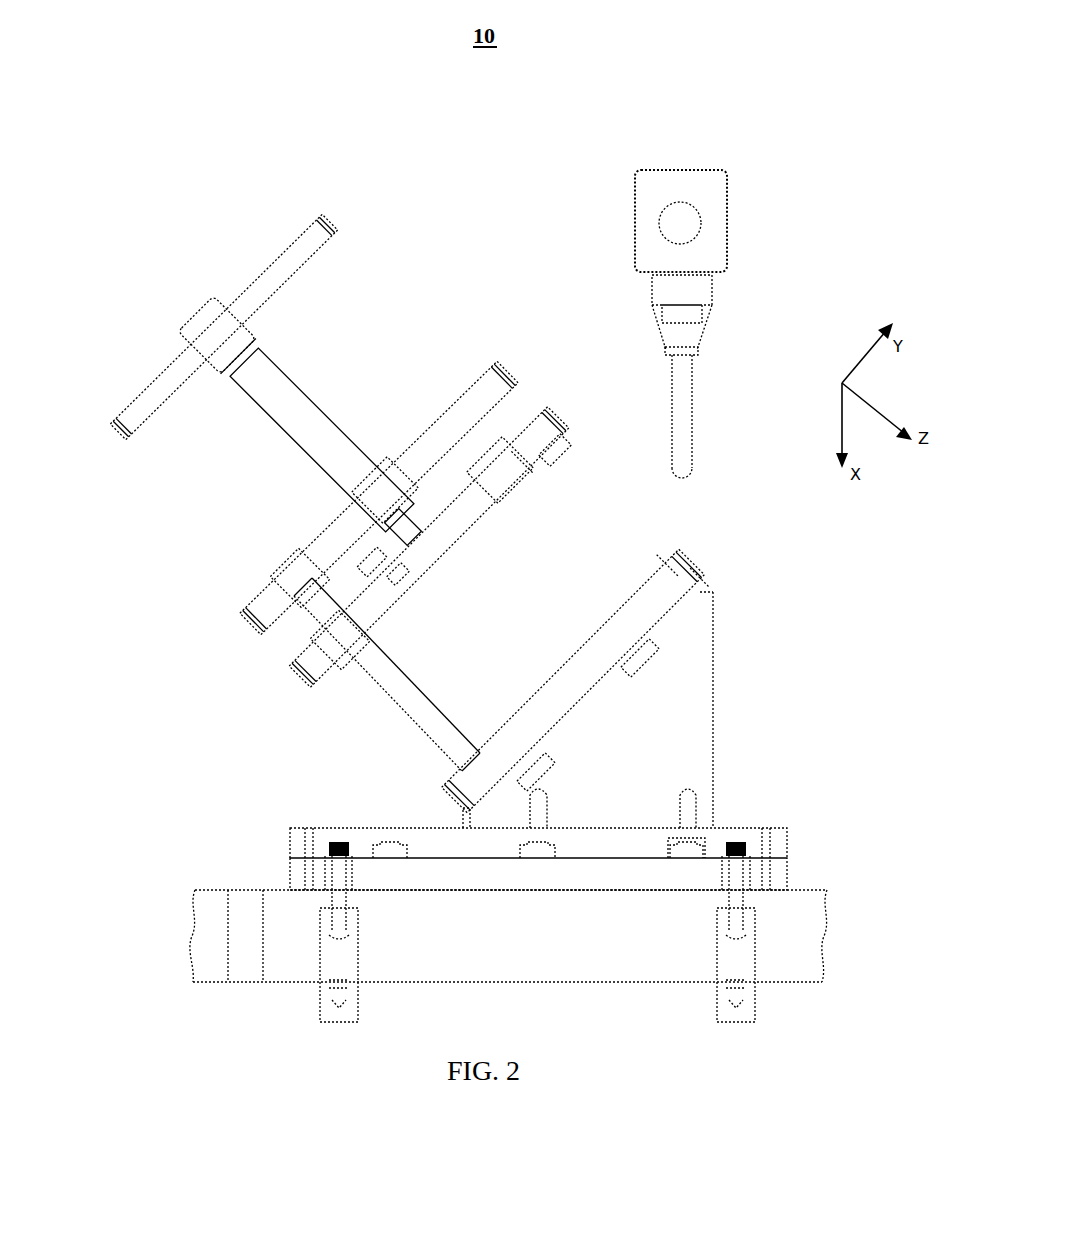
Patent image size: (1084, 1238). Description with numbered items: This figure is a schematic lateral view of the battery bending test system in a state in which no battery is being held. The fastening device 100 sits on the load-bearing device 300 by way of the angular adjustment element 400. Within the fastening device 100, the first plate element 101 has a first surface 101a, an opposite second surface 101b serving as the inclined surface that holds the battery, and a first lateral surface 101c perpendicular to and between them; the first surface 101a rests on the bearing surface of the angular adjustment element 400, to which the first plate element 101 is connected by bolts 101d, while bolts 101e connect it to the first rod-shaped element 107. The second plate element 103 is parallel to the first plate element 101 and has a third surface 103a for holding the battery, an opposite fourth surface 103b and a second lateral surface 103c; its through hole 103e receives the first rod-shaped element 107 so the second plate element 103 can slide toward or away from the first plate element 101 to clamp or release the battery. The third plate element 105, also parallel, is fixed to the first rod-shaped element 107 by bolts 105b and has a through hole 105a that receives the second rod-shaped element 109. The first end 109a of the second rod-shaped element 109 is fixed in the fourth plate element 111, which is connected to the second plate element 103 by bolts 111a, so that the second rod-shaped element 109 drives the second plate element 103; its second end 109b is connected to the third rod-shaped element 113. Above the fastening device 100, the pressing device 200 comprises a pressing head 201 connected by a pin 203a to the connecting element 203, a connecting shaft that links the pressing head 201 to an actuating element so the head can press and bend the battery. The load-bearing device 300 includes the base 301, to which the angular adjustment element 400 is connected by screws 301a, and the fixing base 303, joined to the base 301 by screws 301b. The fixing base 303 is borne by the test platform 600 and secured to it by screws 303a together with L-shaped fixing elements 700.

The fastening device 100 is at (132, 356).
The first plate element 101 is at (552, 710).
The first surface 101a is at (705, 575).
The second surface 101b is at (668, 562).
The first lateral surface 101c is at (707, 558).
The bolts 101d is at (527, 750).
The bolts 101e is at (485, 785).
The second plate element 103 is at (308, 675).
The third surface 103a is at (558, 443).
The fourth surface 103b is at (537, 418).
The second lateral surface 103c is at (567, 418).
The through hole 103e is at (347, 637).
The third plate element 105 is at (262, 618).
The through hole 105a is at (372, 502).
The bolts 105b is at (285, 583).
The first rod-shaped element 107 is at (422, 722).
The second rod-shaped element 109 is at (330, 428).
The first end 109a is at (407, 532).
The second end 109b is at (217, 327).
The fourth plate element 111 is at (373, 565).
The bolts 111a is at (397, 575).
The third rod-shaped element 113 is at (293, 270).
The pressing device 200 is at (772, 310).
The pressing head 201 is at (678, 452).
The connecting element 203 is at (715, 248).
The pin 203a is at (690, 220).
The load-bearing device 300 is at (805, 847).
The base 301 is at (757, 827).
The screws 301a is at (690, 850).
The screws 301b is at (317, 883).
The fixing base 303 is at (778, 878).
The screws 303a is at (733, 900).
The angular adjustment element 400 is at (693, 710).
The test platform 600 is at (803, 967).
The fixing elements 700 is at (738, 963).